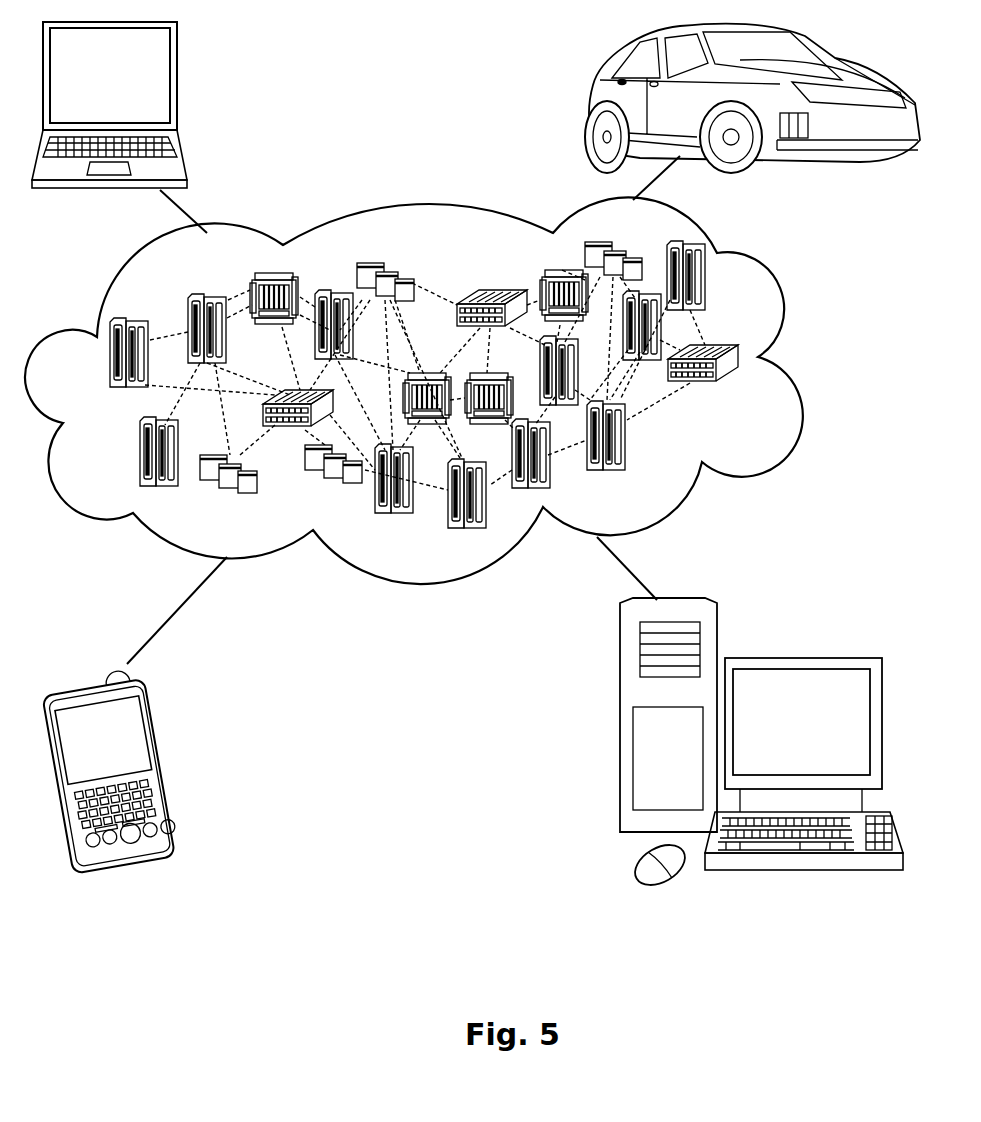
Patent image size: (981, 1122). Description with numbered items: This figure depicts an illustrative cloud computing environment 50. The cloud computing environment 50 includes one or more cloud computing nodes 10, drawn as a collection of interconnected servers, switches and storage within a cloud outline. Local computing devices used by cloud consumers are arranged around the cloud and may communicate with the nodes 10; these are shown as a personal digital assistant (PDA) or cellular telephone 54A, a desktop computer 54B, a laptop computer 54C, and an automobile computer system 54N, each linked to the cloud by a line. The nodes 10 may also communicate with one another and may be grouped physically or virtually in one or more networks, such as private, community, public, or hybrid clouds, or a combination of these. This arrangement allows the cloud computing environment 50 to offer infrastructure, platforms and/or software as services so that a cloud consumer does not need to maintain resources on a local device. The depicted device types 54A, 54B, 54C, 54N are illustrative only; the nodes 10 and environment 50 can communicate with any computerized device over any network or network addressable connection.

The cloud computing nodes 10 is at (475, 384).
The cloud computing environment 50 is at (806, 363).
The personal digital assistant (PDA) or cellular telephone 54A is at (165, 755).
The desktop computer 54B is at (800, 656).
The laptop computer 54C is at (178, 84).
The automobile computer system 54N is at (590, 103).